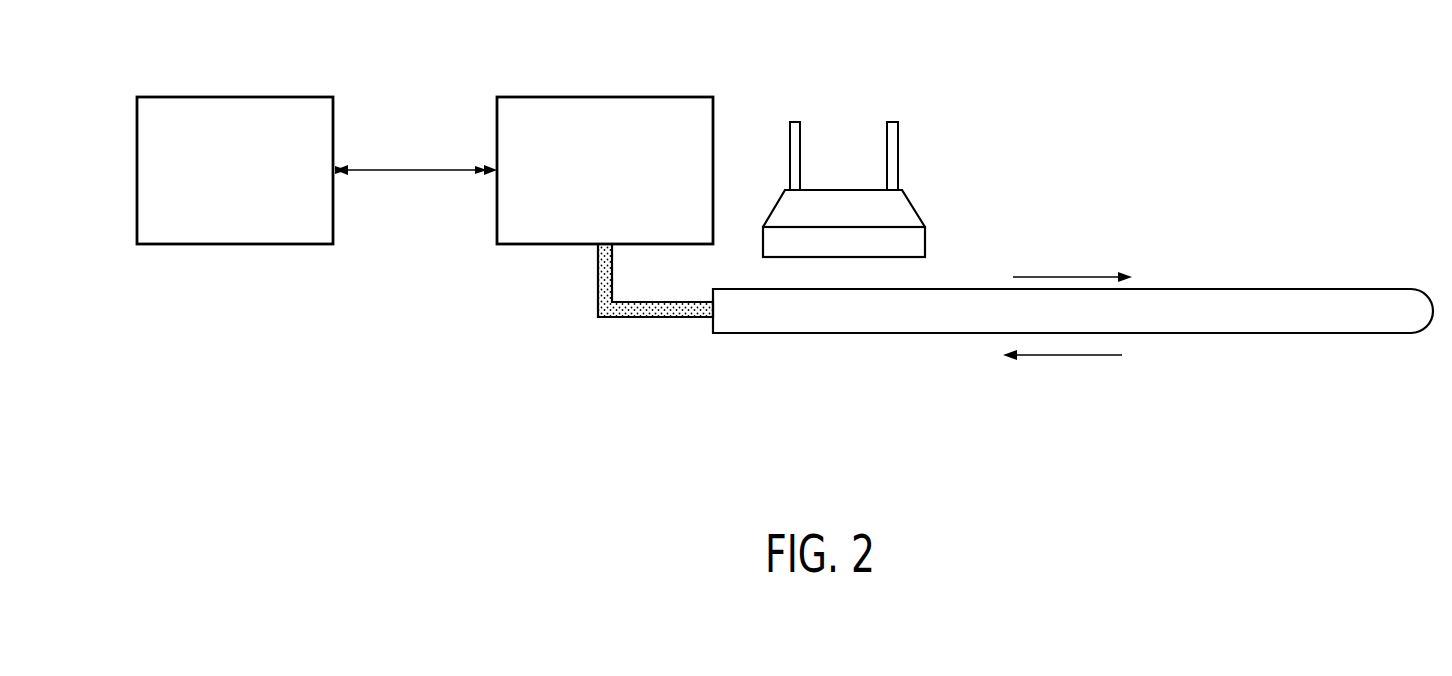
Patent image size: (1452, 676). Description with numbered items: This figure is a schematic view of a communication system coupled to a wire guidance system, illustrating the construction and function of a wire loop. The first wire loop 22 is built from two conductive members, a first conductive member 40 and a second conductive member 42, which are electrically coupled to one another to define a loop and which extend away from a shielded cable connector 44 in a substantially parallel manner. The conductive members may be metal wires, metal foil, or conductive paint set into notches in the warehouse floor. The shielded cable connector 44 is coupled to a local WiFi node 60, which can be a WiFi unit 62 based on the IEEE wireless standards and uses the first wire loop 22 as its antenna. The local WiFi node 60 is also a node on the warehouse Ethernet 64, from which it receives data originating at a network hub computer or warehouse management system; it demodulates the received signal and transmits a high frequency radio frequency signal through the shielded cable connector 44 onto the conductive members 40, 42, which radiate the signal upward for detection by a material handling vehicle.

The first wire loop 22 is at (1287, 223).
The first conductive member 40 is at (1227, 288).
The second conductive member 42 is at (1228, 333).
The shielded cable connector 44 is at (626, 318).
The local WiFi node 60 is at (606, 96).
The WiFi unit 62 is at (917, 207).
The warehouse Ethernet 64 is at (235, 96).